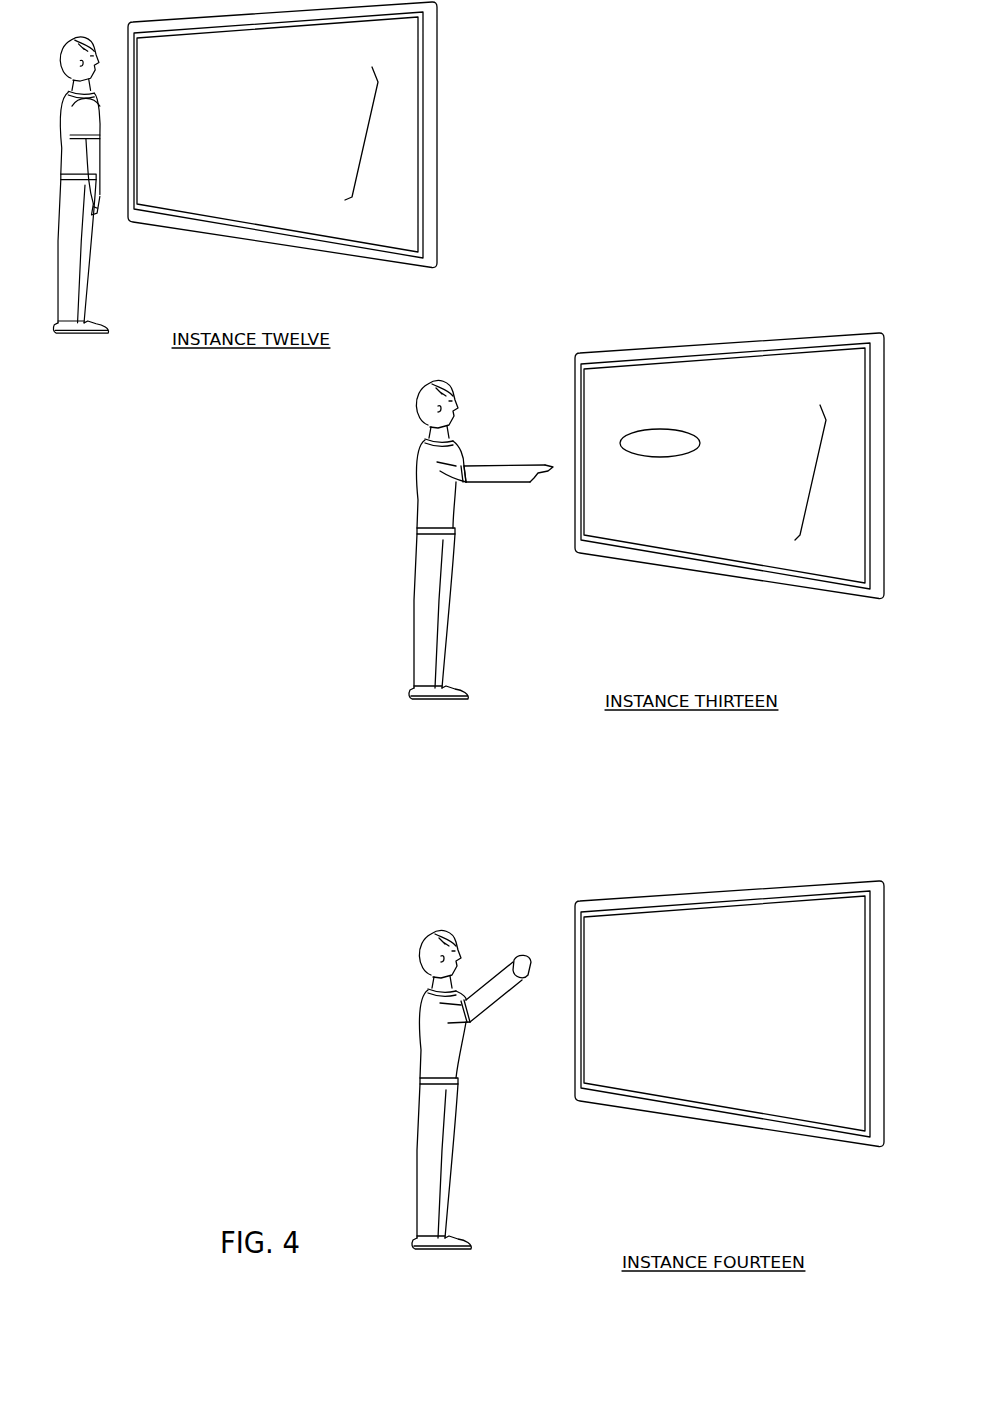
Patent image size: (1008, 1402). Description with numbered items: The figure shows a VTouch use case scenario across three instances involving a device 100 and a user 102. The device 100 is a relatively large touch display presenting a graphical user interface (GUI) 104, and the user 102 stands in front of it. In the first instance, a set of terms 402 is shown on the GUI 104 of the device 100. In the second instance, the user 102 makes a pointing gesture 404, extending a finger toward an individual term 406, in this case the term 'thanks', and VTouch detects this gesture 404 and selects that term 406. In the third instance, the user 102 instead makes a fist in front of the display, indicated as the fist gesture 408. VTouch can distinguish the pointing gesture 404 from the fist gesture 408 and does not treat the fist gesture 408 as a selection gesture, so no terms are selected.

The device 100 is at (437, 80).
The user 102 is at (90, 304).
The graphical user interface (GUI) 104 is at (361, 224).
The set of terms 402 is at (361, 170).
The pointing gesture 404 is at (550, 489).
The individual term 406 is at (662, 418).
The fist gesture 408 is at (517, 985).